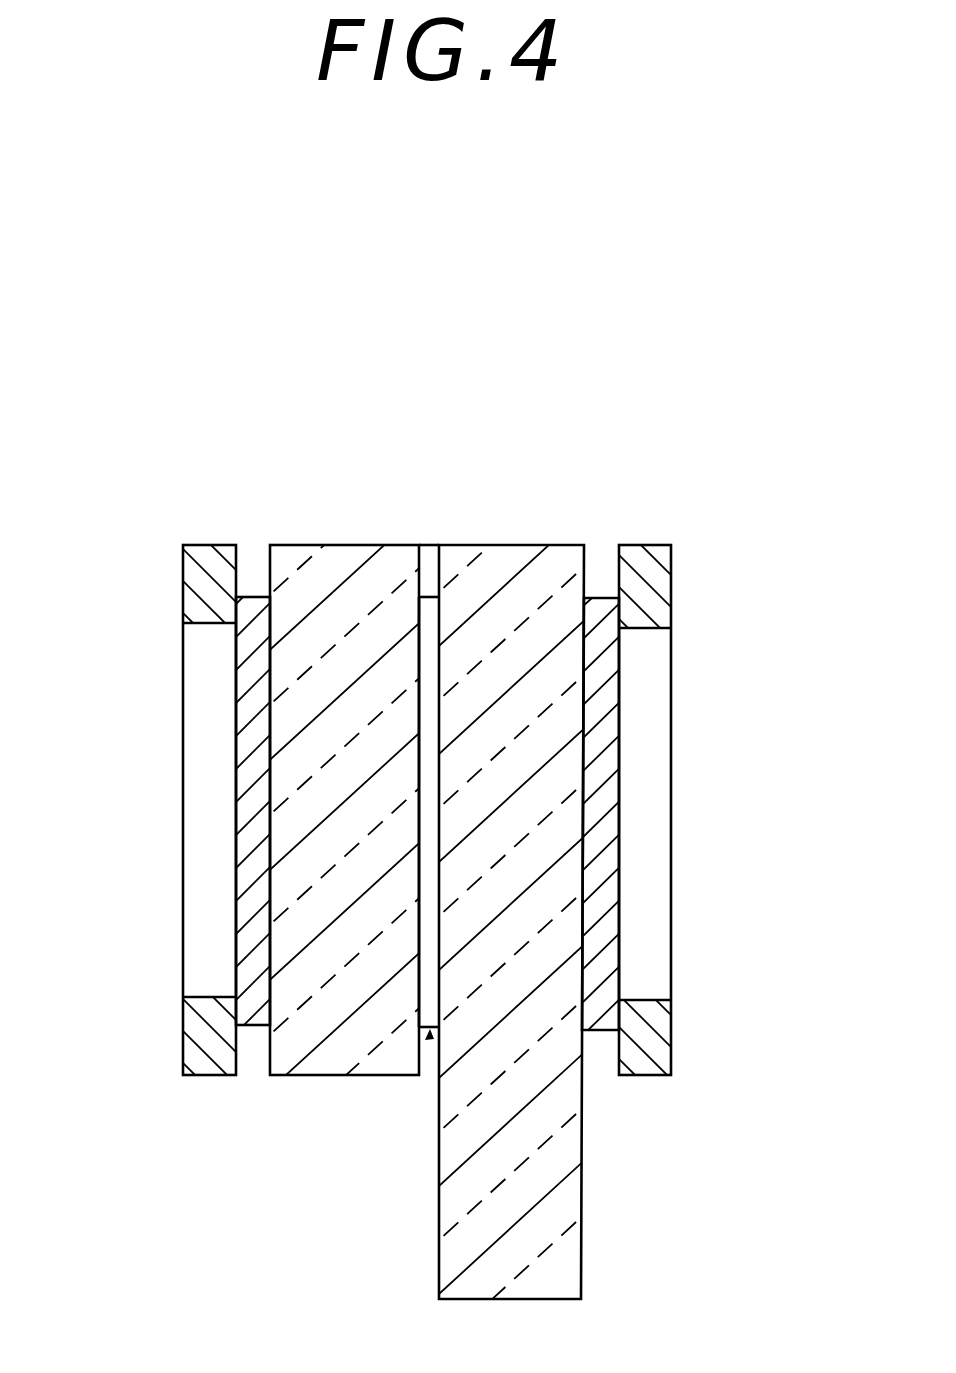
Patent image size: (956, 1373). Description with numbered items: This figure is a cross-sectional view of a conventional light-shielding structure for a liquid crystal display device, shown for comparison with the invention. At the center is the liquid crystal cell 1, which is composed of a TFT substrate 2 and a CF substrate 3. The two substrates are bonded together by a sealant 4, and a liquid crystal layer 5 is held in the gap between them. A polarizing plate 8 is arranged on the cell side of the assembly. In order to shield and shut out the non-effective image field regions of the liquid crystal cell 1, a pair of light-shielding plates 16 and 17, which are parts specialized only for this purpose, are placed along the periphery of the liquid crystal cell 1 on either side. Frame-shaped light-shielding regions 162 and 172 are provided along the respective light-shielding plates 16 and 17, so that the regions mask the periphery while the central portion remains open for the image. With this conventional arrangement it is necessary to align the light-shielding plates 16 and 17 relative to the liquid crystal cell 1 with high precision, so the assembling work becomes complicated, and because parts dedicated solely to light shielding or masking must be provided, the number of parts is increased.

The liquid crystal cell 1 is at (507, 393).
The TFT substrate 2 is at (510, 565).
The CF substrate 3 is at (309, 566).
The sealant 4 is at (432, 578).
The liquid crystal layer 5 is at (417, 636).
The polarizing plate 8 is at (258, 596).
The light-shielding plate 16 is at (683, 810).
The light-shielding region 162 is at (657, 607).
The light-shielding plate 17 is at (163, 810).
The light-shielding region 172 is at (197, 585).